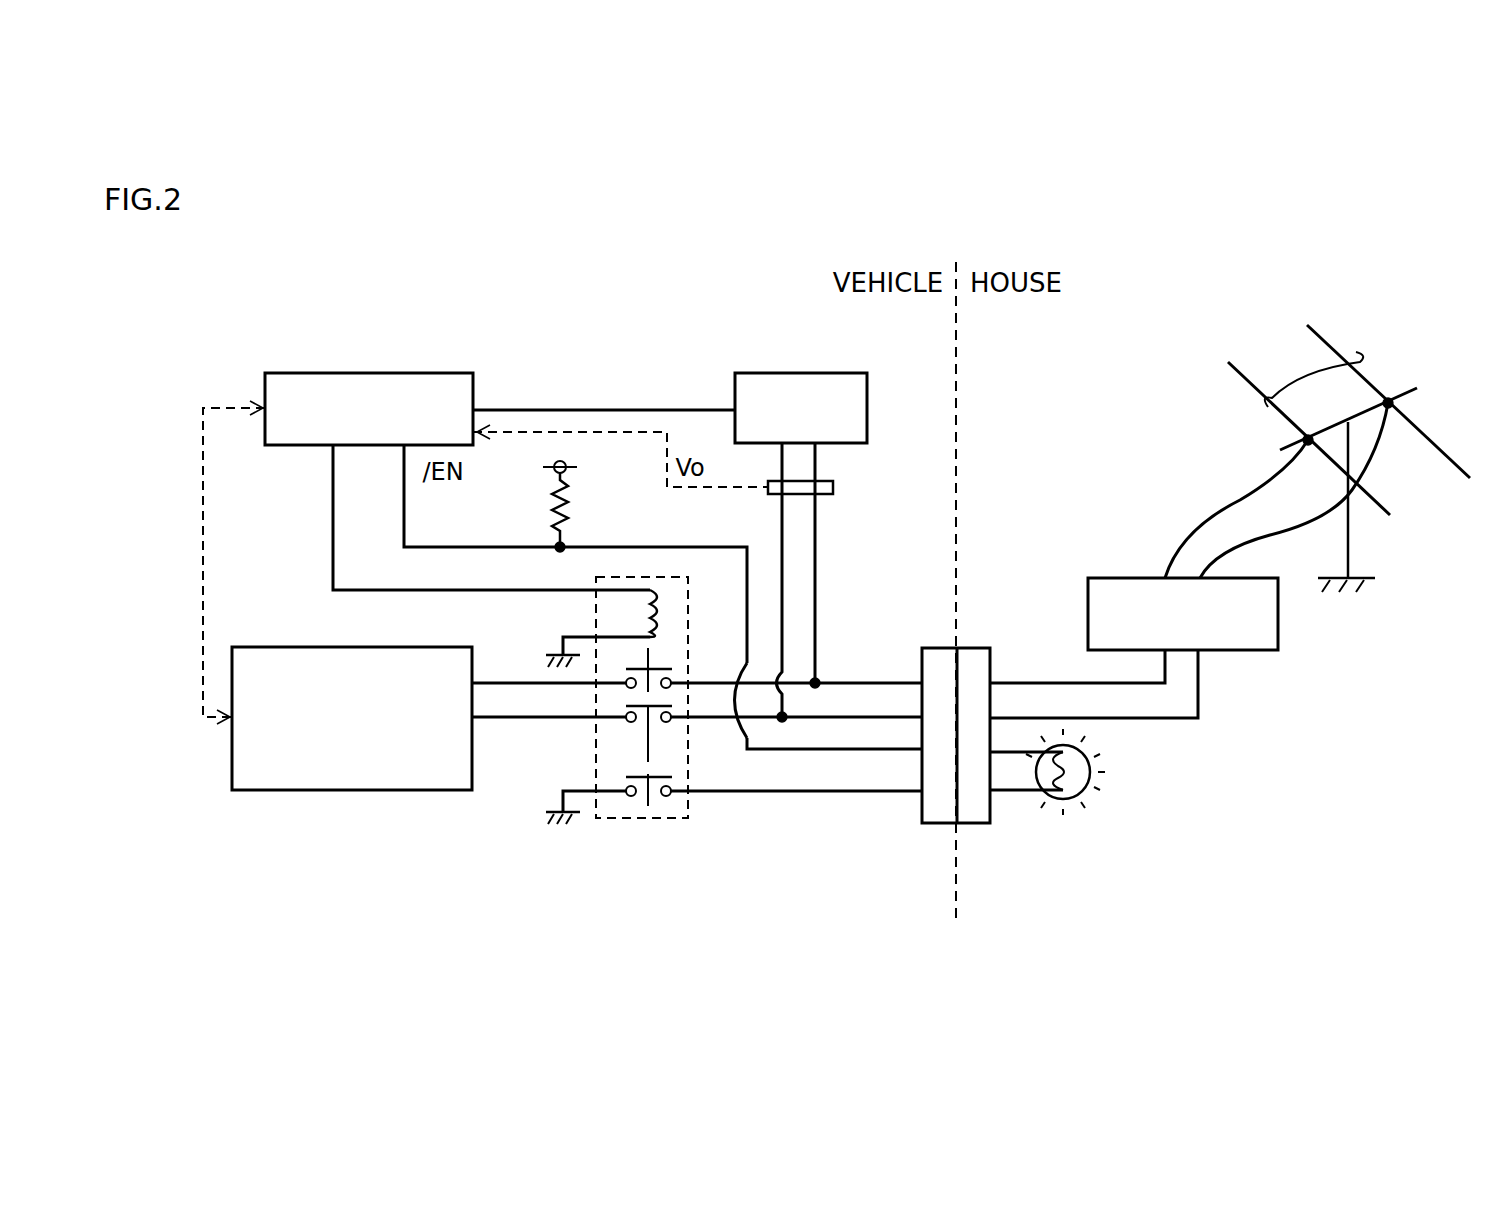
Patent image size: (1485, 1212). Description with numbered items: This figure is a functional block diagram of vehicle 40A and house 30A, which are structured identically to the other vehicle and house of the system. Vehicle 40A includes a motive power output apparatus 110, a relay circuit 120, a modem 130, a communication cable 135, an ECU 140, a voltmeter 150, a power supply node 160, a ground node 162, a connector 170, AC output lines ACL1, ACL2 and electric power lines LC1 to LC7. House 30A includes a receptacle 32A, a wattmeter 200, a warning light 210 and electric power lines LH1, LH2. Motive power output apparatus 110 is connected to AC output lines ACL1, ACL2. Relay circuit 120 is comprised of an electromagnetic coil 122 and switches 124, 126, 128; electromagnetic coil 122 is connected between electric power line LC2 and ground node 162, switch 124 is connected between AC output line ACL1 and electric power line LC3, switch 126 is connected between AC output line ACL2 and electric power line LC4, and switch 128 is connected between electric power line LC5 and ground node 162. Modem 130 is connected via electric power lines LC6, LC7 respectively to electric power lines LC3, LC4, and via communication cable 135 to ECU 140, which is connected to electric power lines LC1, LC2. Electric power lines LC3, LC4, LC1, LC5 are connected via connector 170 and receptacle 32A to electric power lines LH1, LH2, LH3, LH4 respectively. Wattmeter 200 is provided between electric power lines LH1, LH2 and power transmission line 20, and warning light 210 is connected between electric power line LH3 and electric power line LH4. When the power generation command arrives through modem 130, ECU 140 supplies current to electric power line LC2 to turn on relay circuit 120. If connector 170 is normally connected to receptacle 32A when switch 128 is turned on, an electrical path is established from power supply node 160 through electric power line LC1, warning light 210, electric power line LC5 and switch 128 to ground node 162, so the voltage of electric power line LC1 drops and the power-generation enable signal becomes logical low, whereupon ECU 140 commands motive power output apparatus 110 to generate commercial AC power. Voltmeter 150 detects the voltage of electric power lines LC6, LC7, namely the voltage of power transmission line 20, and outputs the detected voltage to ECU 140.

The ECU 140 is at (316, 372).
The modem 130 is at (822, 372).
The communication cable 135 is at (641, 406).
The motive power output apparatus 110 is at (318, 792).
The relay circuit 120 is at (610, 820).
The electromagnetic coil 122 is at (660, 612).
The switch 124 is at (660, 665).
The switch 126 is at (655, 722).
The switch 128 is at (655, 796).
The voltmeter 150 is at (828, 481).
The power supply node 160 is at (560, 461).
The ground node 162 is at (549, 656).
The connector 170 is at (933, 826).
The wattmeter 200 is at (1140, 578).
The warning light 210 is at (1093, 792).
The power transmission line 20 is at (1295, 375).
The receptacle 32A is at (980, 826).
The house 30A is at (1097, 458).
The vehicle 40A is at (680, 253).
The electric power line LC1 is at (623, 546).
The electric power line LC2 is at (497, 588).
The electric power line LC3 is at (840, 681).
The electric power line LC4 is at (818, 715).
The electric power line LC5 is at (828, 795).
The electric power line LC6 is at (815, 514).
The electric power line LC7 is at (782, 514).
The electric power line LH1 is at (1050, 680).
The electric power line LH2 is at (1167, 721).
The electric power line LH3 is at (1007, 754).
The electric power line LH4 is at (1024, 793).
The AC output line ACL1 is at (488, 678).
The AC output line ACL2 is at (522, 720).